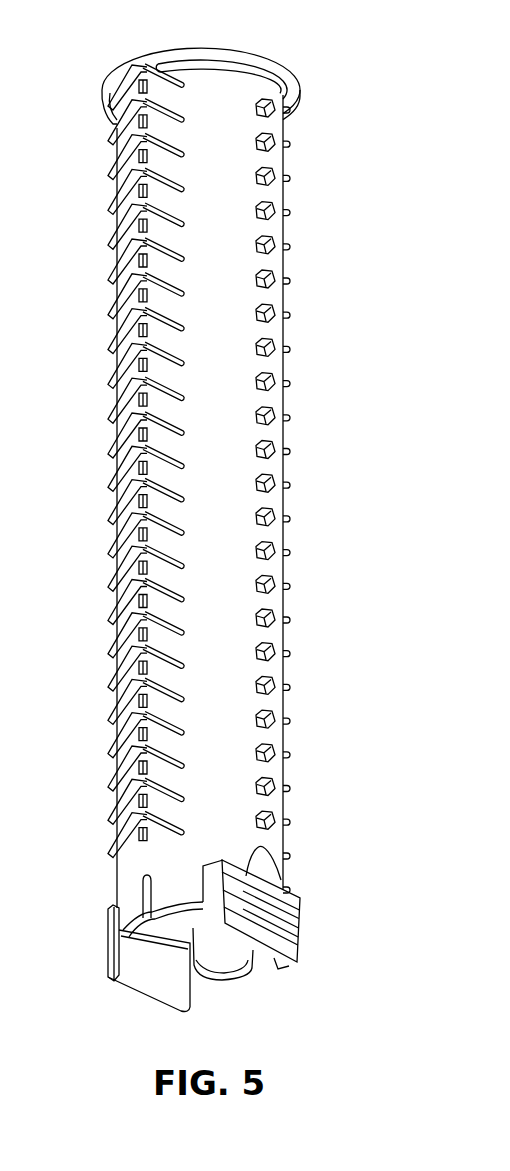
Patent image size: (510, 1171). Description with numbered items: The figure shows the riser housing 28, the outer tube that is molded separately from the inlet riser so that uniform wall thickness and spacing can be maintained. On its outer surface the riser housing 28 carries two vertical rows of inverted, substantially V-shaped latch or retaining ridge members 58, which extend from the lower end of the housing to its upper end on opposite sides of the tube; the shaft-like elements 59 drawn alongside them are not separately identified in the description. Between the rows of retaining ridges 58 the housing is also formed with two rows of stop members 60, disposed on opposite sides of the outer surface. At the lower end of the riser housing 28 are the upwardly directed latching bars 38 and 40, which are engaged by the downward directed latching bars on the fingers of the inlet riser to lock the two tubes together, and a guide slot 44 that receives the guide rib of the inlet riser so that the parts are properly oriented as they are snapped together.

The riser housing 28 is at (233, 442).
The latching bar 38 is at (108, 931).
The latching bar 40 is at (298, 907).
The guide slot 44 is at (143, 893).
The retaining ridge 58 is at (110, 165).
The contact pin 59 is at (145, 398).
The stop member 60 is at (283, 132).